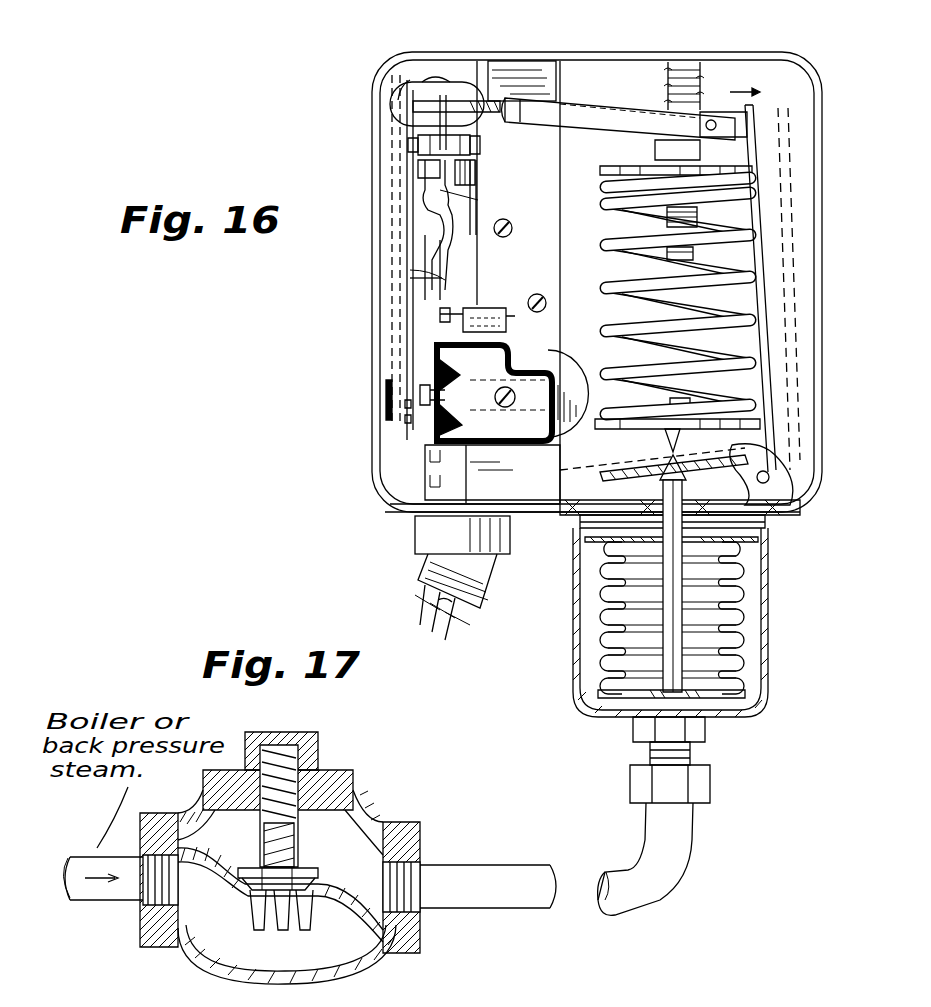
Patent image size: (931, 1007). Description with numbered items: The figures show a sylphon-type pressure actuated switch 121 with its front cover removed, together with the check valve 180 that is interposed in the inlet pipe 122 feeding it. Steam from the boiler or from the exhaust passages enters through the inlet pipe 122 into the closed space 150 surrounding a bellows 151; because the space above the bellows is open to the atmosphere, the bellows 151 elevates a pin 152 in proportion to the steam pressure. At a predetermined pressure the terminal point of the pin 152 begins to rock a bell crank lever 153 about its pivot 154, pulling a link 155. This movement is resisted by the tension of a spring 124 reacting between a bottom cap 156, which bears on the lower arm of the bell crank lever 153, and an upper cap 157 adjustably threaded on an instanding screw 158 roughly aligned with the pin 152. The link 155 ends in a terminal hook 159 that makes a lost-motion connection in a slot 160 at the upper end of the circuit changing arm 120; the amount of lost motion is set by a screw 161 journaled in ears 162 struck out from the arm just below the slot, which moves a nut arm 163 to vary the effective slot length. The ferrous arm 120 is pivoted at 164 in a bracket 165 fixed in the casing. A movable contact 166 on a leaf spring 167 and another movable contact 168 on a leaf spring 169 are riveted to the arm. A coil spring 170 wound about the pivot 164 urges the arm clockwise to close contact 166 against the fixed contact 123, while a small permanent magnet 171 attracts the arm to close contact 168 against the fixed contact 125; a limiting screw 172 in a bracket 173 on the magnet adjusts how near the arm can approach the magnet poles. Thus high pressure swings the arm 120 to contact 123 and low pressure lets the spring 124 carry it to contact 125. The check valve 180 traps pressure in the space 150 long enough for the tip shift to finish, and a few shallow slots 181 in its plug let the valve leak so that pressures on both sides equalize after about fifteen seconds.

In FIG. 16, the circuit changing arm 120 is at (405, 496).
In FIG. 16, the pressure actuated switch 121 is at (372, 310).
In FIG. 16, the inlet pipe 122 is at (676, 838).
In FIG. 17, the inlet pipe 122 is at (95, 905).
In FIG. 16, the fixed contact 123 is at (388, 432).
In FIG. 16, the spring 124 is at (750, 320).
In FIG. 16, the fixed contact 125 is at (492, 470).
In FIG. 16, the closed space 150 is at (755, 645).
In FIG. 16, the bellows 151 is at (740, 615).
In FIG. 16, the pin 152 is at (678, 652).
In FIG. 16, the bell crank lever 153 is at (770, 453).
In FIG. 16, the pivot 154 is at (770, 478).
In FIG. 16, the link 155 is at (606, 112).
In FIG. 16, the bottom cap 156 is at (740, 455).
In FIG. 16, the upper cap 157 is at (608, 166).
In FIG. 16, the instanding screw 158 is at (700, 92).
In FIG. 16, the terminal hook 159 is at (418, 80).
In FIG. 16, the slot 160 is at (455, 95).
In FIG. 16, the screw 161 is at (482, 146).
In FIG. 16, the ears 162 is at (418, 160).
In FIG. 16, the nut arm 163 is at (446, 100).
In FIG. 16, the pivot 164 is at (430, 170).
In FIG. 16, the bracket 165 is at (478, 214).
In FIG. 16, the movable contact 166 is at (412, 430).
In FIG. 16, the leaf spring 167 is at (412, 278).
In FIG. 16, the movable contact 168 is at (425, 378).
In FIG. 16, the leaf spring 169 is at (420, 305).
In FIG. 16, the coil spring 170 is at (447, 267).
In FIG. 16, the permanent magnet 171 is at (565, 380).
In FIG. 16, the limiting screw 172 is at (518, 308).
In FIG. 16, the bracket 173 is at (522, 372).
In FIG. 17, the check valve 180 is at (330, 768).
In FIG. 17, the slots 181 is at (298, 880).